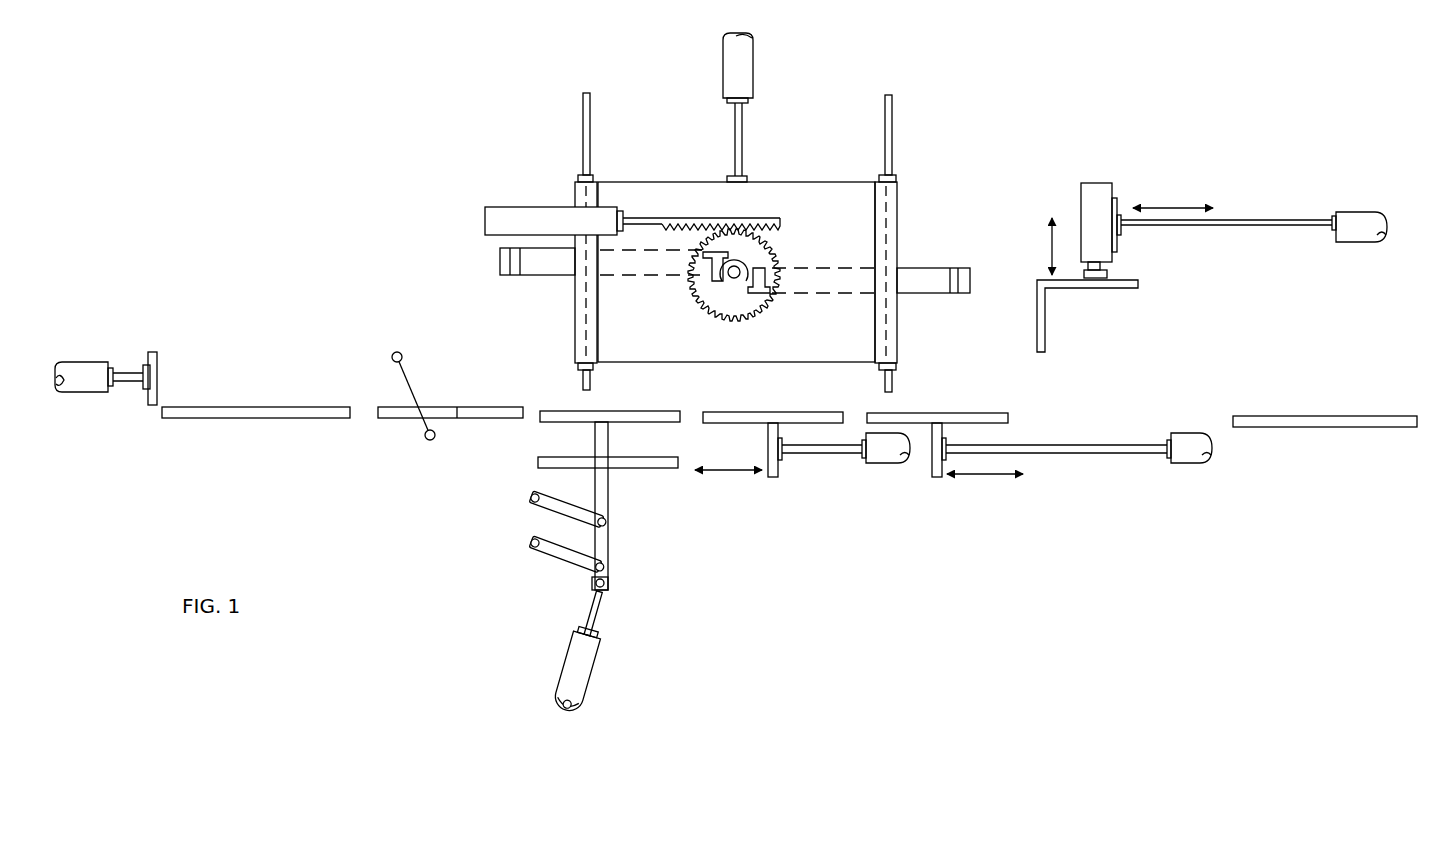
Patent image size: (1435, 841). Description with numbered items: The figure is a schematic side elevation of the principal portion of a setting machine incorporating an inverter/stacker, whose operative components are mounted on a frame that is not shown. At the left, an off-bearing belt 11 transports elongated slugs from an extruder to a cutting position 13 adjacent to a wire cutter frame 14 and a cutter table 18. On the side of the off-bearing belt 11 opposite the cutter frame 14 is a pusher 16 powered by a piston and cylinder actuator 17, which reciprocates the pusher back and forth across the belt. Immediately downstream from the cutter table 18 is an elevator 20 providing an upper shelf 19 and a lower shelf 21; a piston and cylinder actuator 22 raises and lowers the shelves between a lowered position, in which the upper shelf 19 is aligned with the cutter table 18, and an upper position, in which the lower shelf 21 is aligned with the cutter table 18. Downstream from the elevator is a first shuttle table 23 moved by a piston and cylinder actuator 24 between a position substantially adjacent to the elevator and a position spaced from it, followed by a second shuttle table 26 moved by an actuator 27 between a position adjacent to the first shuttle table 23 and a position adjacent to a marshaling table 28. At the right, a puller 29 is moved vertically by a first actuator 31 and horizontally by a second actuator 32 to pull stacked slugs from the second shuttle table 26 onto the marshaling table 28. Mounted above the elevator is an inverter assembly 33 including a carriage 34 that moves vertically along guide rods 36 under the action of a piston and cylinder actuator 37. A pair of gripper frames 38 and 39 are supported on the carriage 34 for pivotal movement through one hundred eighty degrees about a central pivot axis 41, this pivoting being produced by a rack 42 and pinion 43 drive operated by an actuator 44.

The off-bearing belt 11 is at (277, 408).
The cutting position 13 is at (400, 425).
The wire cutter frame 14 is at (395, 352).
The pusher 16 is at (157, 367).
The piston and cylinder actuator 17 is at (80, 378).
The cutter table 18 is at (457, 418).
The upper shelf 19 is at (622, 412).
The elevator 20 is at (518, 520).
The lower shelf 21 is at (637, 468).
The piston and cylinder actuator 22 is at (578, 663).
The first shuttle table 23 is at (740, 411).
The piston and cylinder actuator 24 is at (888, 458).
The second shuttle table 26 is at (925, 412).
The actuator 27 is at (1197, 458).
The marshaling table 28 is at (1275, 420).
The puller 29 is at (1045, 333).
The first actuator 31 is at (1092, 210).
The second actuator 32 is at (1350, 222).
The inverter assembly 33 is at (721, 212).
The carriage 34 is at (760, 350).
The guide rods 36 is at (585, 137).
The piston and cylinder actuator 37 is at (742, 73).
The gripper frame 38 is at (540, 263).
The gripper frame 39 is at (918, 283).
The central pivot axis 41 is at (730, 277).
The rack 42 is at (718, 223).
The pinion 43 is at (740, 310).
The actuator 44 is at (542, 220).